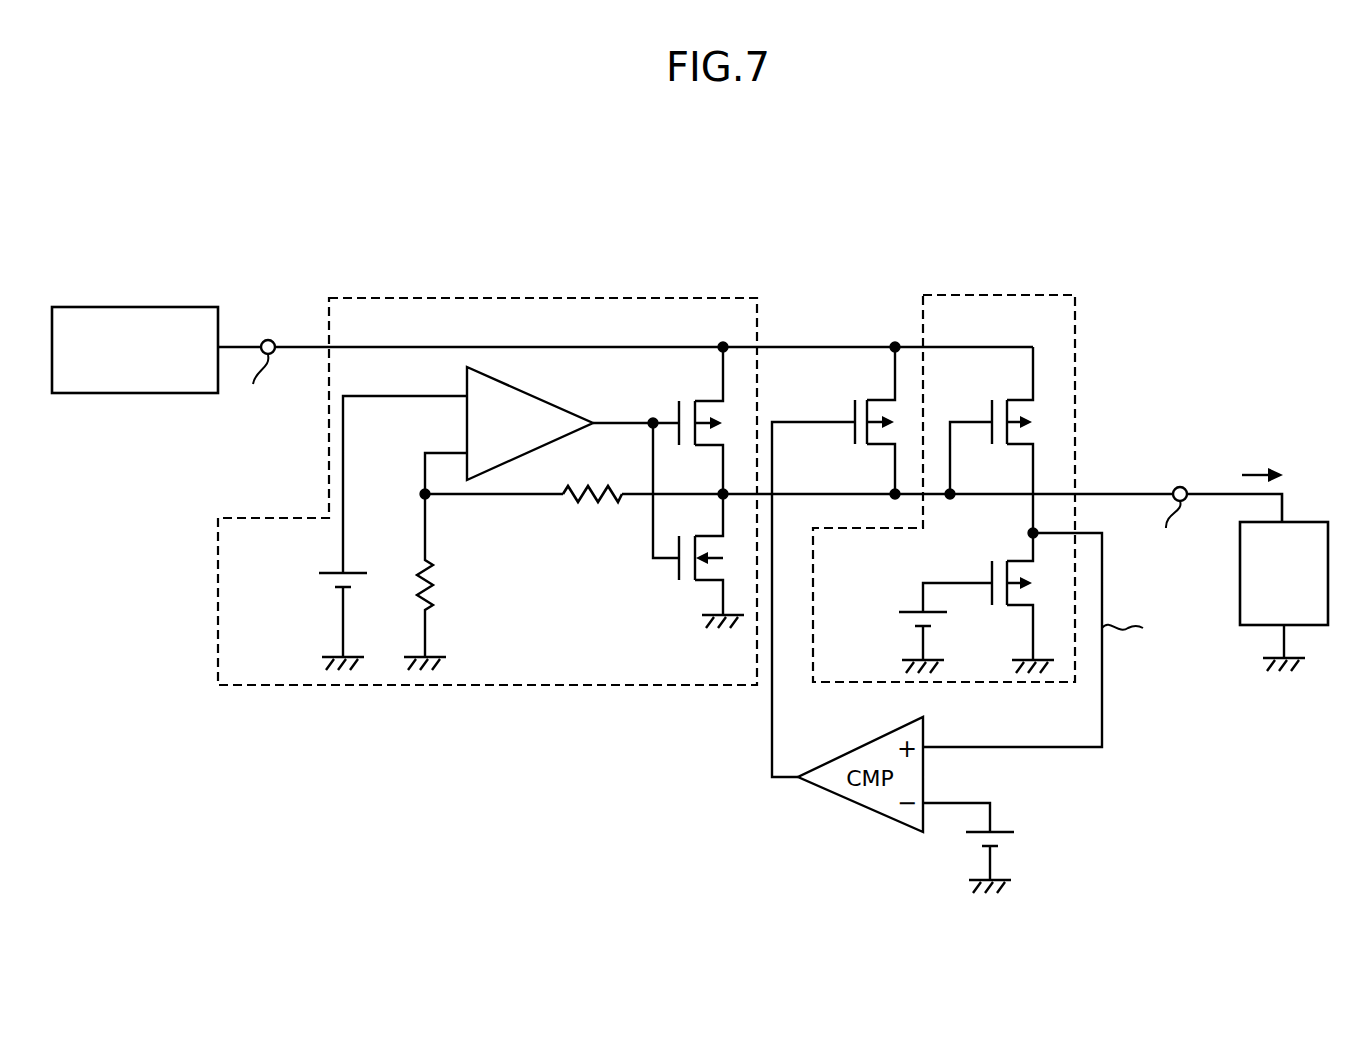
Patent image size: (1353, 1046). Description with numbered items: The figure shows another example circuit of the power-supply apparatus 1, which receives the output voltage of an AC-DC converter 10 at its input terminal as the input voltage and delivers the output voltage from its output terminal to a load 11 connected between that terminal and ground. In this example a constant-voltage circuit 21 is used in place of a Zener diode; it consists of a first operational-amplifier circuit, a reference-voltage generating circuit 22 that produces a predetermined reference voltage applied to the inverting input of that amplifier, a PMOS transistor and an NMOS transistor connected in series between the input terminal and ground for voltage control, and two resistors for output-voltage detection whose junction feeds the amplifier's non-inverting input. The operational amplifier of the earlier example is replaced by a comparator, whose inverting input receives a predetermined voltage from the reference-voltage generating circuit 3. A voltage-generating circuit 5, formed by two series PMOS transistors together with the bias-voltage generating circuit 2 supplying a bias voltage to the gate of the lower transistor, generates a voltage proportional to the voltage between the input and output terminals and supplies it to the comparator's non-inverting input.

The power-supply apparatus 1 is at (941, 240).
The bias-voltage generating circuit 2 is at (937, 617).
The reference-voltage generating circuit 3 is at (1015, 837).
The voltage-generating circuit 5 is at (1040, 316).
The AC-DC converter 10 is at (134, 307).
The load 11 is at (1298, 521).
The constant-voltage circuit 21 is at (687, 318).
The reference-voltage generating circuit 22 is at (323, 588).